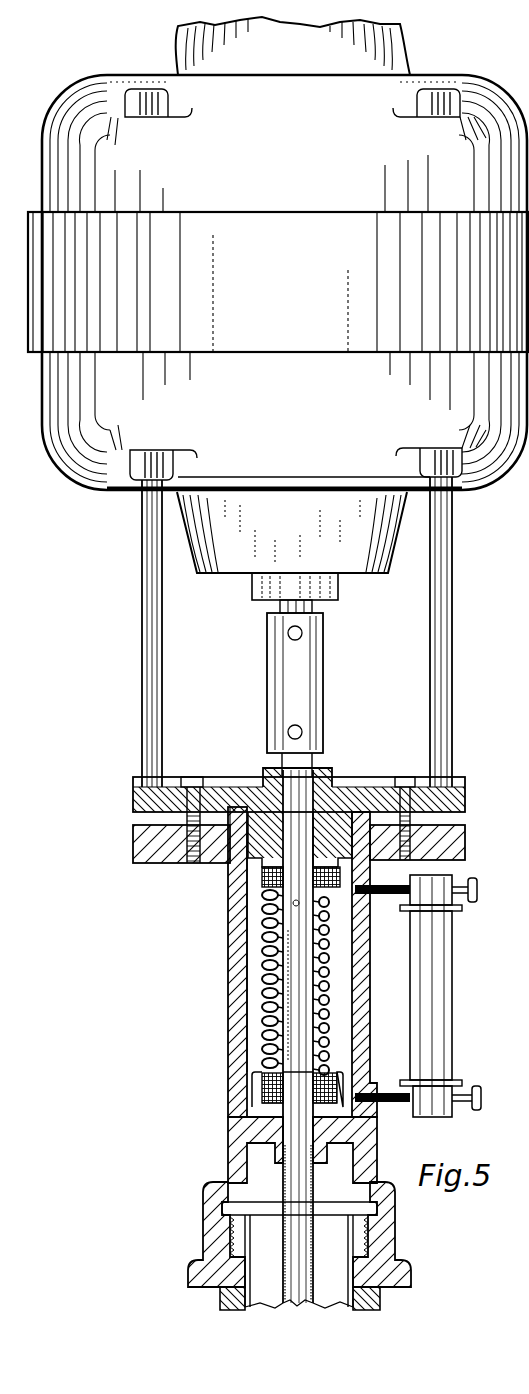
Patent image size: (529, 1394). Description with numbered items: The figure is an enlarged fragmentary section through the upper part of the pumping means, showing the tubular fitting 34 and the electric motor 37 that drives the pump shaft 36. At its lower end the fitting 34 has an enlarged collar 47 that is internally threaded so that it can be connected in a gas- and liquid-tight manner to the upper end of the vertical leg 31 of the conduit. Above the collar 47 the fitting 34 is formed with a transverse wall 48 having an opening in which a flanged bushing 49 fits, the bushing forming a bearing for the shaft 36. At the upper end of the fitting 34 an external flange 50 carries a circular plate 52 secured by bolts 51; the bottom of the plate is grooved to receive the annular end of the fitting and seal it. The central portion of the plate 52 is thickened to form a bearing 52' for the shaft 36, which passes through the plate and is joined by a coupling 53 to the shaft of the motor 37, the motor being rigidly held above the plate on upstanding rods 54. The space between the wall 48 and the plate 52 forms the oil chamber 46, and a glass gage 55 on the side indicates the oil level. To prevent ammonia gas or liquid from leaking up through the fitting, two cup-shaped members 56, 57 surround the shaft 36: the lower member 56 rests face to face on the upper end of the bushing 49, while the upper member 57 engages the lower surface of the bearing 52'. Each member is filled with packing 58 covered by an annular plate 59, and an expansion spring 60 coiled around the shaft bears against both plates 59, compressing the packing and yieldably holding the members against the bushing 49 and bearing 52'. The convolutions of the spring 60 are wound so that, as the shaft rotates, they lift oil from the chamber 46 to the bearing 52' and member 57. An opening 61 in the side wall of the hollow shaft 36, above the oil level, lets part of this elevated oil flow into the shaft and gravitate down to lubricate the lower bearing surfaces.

The electric motor 37 is at (278, 315).
The up-standing rods 54 is at (143, 621).
The coupling 53 is at (308, 698).
The circular plate 52 is at (318, 790).
The bearing 52' is at (207, 849).
The bolts 51 is at (193, 864).
The external flange 50 is at (150, 855).
The cup-shaped member 57 is at (256, 890).
The packing 58 is at (341, 877).
The annular plate 59 is at (331, 895).
The opening 61 is at (301, 926).
The expansion spring 60 is at (322, 950).
The glass gage 55 is at (453, 969).
The tubular fitting 34 is at (284, 962).
The oil chamber 46 is at (253, 1028).
The cup-shaped member 56 is at (256, 1090).
The transverse wall 48 is at (250, 1128).
The shaft 36 is at (283, 1175).
The flanged bushing 49 is at (323, 1176).
The enlarged collar 47 is at (212, 1226).
The vertical leg 31 is at (228, 1295).